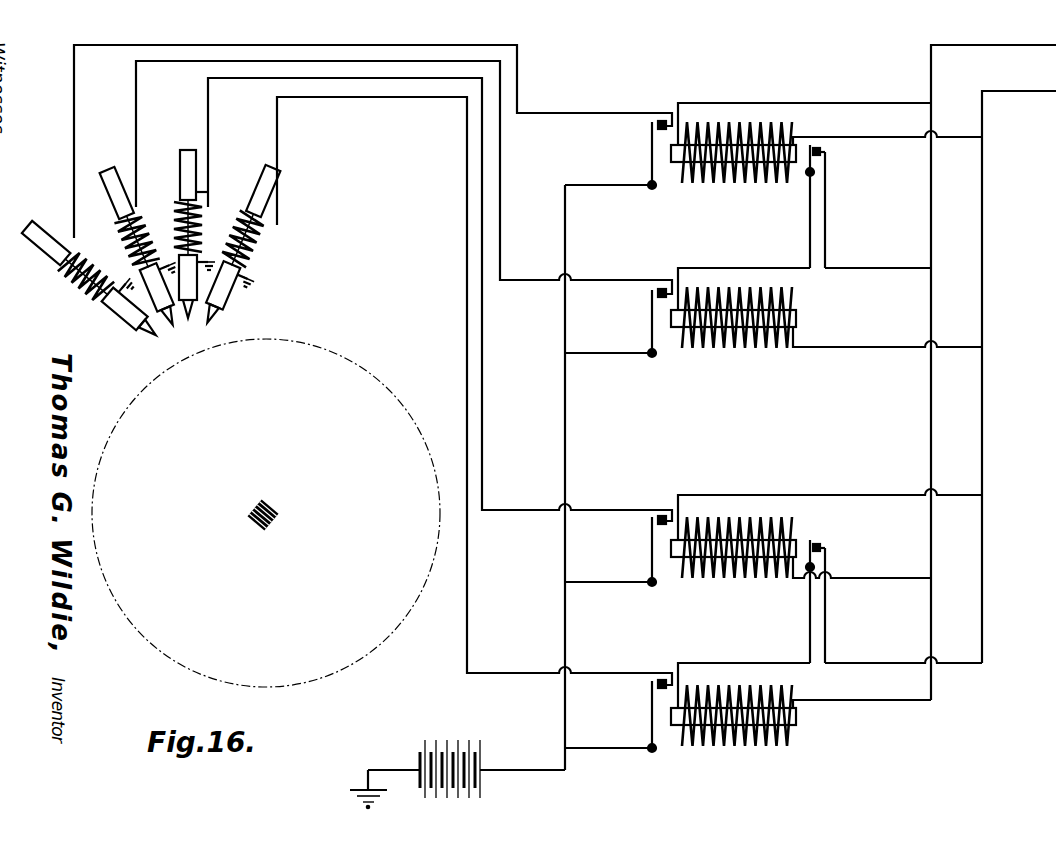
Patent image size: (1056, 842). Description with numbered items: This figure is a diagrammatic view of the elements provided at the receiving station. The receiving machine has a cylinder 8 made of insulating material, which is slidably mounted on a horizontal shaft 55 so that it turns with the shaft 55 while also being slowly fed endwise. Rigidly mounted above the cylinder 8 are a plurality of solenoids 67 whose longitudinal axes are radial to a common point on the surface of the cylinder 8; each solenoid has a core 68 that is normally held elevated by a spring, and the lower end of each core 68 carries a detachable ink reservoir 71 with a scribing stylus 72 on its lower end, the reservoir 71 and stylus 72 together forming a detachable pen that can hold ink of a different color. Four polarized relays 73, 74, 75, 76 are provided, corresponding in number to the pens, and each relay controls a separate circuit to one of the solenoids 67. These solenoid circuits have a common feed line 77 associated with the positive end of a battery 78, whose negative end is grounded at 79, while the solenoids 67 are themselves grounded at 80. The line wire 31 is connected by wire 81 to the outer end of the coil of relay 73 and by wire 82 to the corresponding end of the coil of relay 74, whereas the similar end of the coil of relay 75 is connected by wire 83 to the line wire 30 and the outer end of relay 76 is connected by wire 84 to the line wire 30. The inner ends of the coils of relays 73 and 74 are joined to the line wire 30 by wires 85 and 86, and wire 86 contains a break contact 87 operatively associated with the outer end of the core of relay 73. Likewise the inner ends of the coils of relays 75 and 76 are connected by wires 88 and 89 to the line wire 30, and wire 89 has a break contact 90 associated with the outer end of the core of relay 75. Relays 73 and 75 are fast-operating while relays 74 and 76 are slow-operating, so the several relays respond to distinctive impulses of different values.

The cylinder 8 is at (266, 513).
The line wire 30 is at (993, 372).
The line wire 31 is at (1019, 377).
The horizontal shaft 55 is at (285, 504).
The solenoids 67 is at (181, 255).
The cores 68 is at (151, 207).
The ink reservoir 71 is at (198, 297).
The scribing stylus 72 is at (134, 327).
The polarized relay 73 is at (373, 141).
The polarized relay 74 is at (404, 209).
The polarized relay 75 is at (440, 332).
The polarized relay 76 is at (474, 424).
The common feed line 77 is at (542, 477).
The battery 78 is at (466, 761).
The ground 79 is at (378, 798).
The ground 80 is at (196, 306).
The wire 81 is at (887, 152).
The wire 82 is at (887, 358).
The wire 83 is at (862, 563).
The wire 84 is at (862, 723).
The wire 85 is at (801, 127).
The wire 86 is at (740, 290).
The break contact 87 is at (868, 206).
The wire 88 is at (826, 521).
The wire 89 is at (826, 688).
The break contact 90 is at (834, 600).